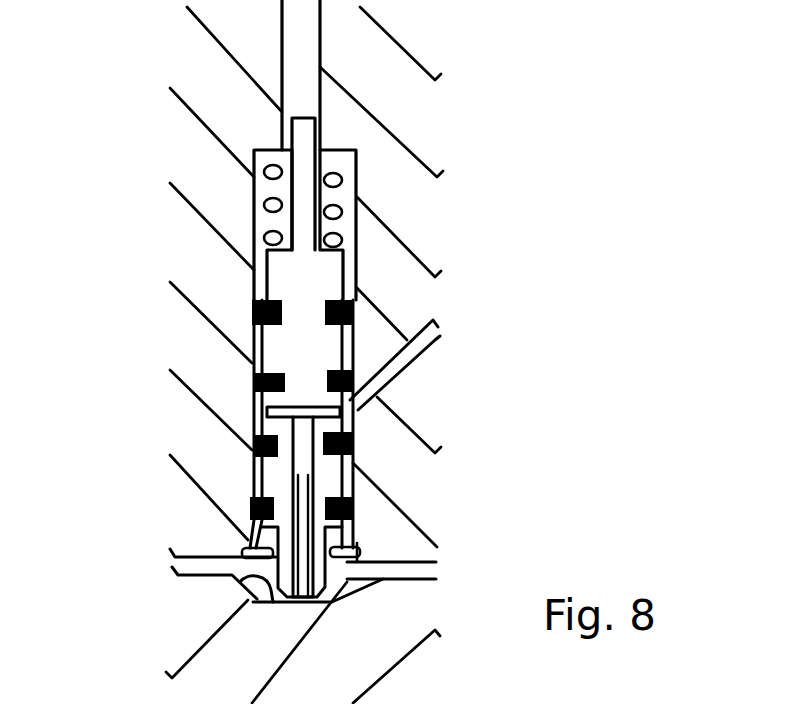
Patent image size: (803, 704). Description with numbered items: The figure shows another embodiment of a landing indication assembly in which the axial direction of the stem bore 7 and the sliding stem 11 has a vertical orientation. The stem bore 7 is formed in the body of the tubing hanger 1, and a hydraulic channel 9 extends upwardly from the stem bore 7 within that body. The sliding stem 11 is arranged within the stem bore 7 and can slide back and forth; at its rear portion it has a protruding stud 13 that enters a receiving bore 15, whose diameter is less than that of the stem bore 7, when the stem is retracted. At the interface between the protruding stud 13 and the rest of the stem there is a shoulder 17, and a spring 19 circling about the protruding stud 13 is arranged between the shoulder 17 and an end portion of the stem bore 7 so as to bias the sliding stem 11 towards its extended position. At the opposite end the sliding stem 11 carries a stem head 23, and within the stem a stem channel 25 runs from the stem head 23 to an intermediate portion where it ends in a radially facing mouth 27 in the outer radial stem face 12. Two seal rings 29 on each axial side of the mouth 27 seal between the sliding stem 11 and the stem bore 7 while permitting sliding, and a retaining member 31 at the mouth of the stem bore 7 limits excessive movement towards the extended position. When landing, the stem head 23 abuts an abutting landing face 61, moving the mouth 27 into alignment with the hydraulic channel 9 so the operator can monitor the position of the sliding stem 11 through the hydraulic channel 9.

The tubing hanger 1 is at (193, 58).
The receiving bore 15 is at (322, 62).
The protruding stud 13 is at (306, 146).
The spring 19 is at (333, 178).
The shoulder 17 is at (327, 240).
The sliding stem 11 is at (311, 291).
The seal rings 29 is at (254, 298).
The stem bore 7 is at (257, 341).
The outer radial stem face 12 is at (252, 472).
The hydraulic channel 9 is at (422, 353).
The mouth 27 is at (345, 412).
The stem channel 25 is at (307, 476).
The stem head 23 is at (332, 603).
The retaining member 31 is at (253, 550).
The abutting landing face 61 is at (238, 582).